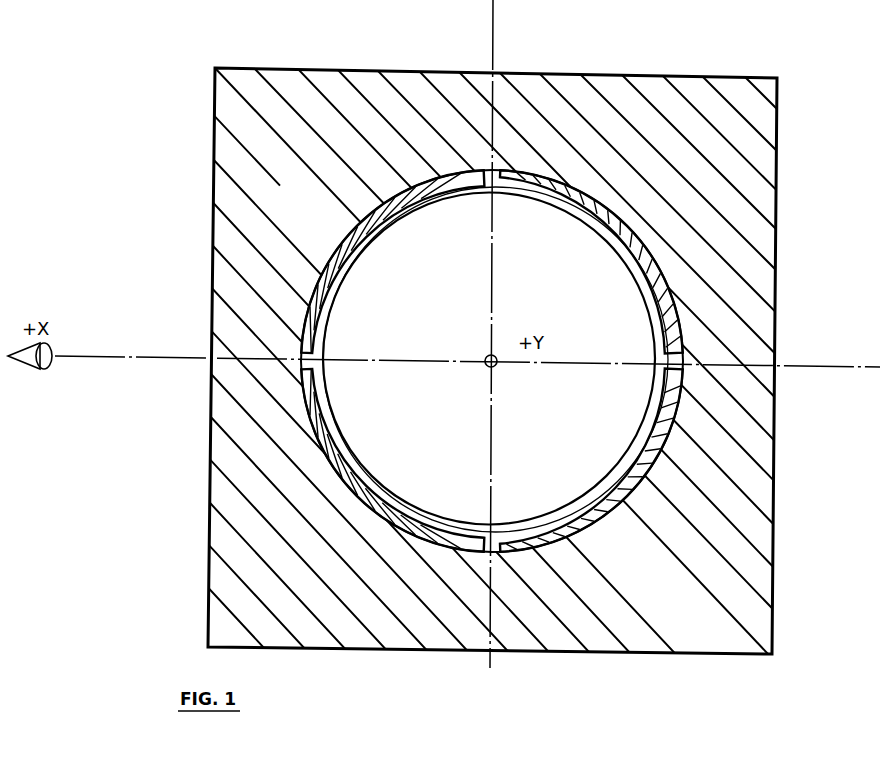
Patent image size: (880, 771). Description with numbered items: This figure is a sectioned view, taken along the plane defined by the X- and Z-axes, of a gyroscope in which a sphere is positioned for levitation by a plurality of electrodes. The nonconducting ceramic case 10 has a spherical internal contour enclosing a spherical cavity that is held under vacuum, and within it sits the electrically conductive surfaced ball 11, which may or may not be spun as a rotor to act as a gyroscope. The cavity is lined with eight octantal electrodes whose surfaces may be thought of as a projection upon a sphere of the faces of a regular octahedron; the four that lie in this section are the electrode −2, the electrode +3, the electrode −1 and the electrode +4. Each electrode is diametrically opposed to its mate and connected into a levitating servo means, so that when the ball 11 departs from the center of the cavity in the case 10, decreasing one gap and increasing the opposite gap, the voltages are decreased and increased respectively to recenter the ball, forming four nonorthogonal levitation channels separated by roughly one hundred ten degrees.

The nonconducting ceramic case 10 is at (263, 227).
The electrically conductive surfaced ball 11 is at (427, 433).
The electrode − 1 is at (645, 471).
The electrode − 2 is at (344, 236).
The electrode + 3 is at (593, 200).
The electrode + 4 is at (372, 504).